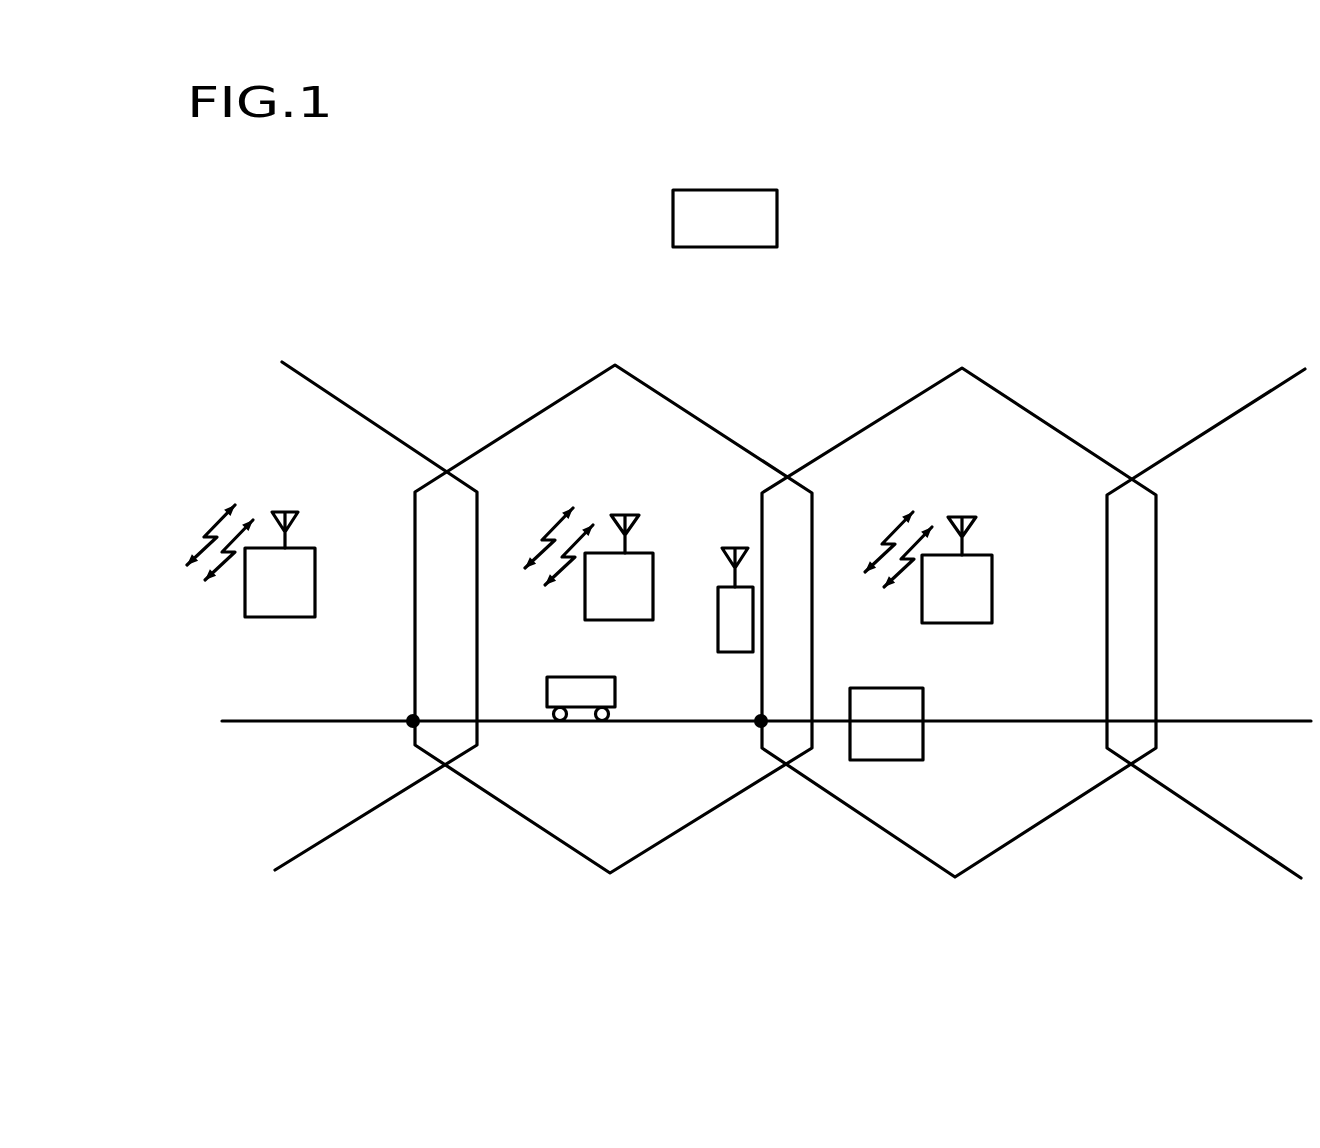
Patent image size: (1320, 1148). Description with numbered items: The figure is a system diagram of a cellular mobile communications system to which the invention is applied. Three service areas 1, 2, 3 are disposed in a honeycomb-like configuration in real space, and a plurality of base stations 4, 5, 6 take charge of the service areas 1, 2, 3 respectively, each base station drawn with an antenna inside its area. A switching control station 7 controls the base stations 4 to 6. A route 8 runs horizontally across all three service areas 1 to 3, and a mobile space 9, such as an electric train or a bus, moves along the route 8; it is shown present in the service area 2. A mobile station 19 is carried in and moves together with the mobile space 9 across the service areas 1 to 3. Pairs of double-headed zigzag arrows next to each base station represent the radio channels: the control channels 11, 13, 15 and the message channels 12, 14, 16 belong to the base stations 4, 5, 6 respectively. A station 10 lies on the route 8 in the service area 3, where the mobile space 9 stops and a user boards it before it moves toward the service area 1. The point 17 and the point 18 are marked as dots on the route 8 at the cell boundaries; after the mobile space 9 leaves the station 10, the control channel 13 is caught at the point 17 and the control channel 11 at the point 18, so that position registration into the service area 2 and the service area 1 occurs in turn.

The service area 1 is at (347, 418).
The service area 2 is at (658, 413).
The service area 3 is at (1048, 440).
The base station 4 is at (293, 597).
The base station 5 is at (643, 612).
The base station 6 is at (983, 600).
The switching control station 7 is at (768, 210).
The route 8 is at (283, 719).
The mobile space 9 is at (590, 688).
The station 10 is at (882, 753).
The control channel 11 is at (215, 521).
The message channel 12 is at (226, 564).
The control channel 13 is at (558, 531).
The message channel 14 is at (560, 572).
The control channel 15 is at (893, 541).
The message channel 16 is at (905, 572).
The point 17 is at (756, 724).
The point 18 is at (413, 725).
The mobile station 19 is at (717, 623).